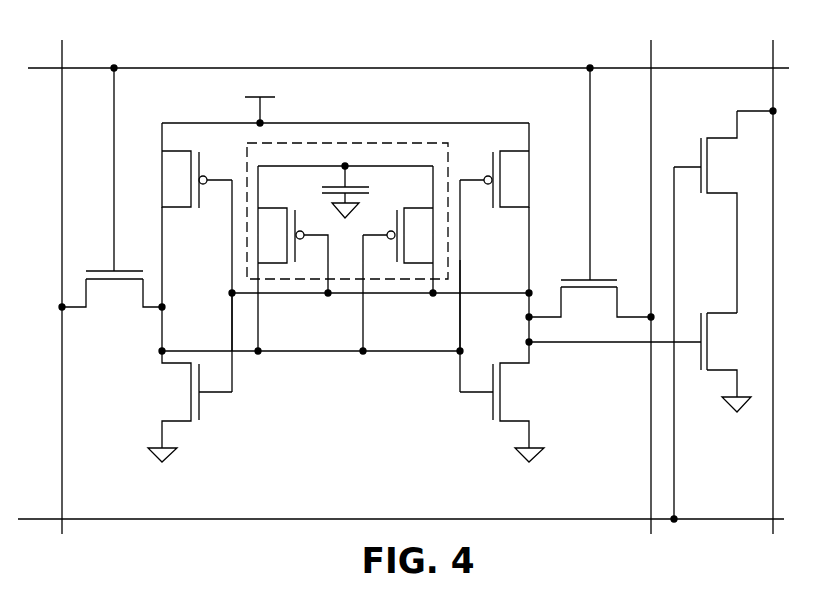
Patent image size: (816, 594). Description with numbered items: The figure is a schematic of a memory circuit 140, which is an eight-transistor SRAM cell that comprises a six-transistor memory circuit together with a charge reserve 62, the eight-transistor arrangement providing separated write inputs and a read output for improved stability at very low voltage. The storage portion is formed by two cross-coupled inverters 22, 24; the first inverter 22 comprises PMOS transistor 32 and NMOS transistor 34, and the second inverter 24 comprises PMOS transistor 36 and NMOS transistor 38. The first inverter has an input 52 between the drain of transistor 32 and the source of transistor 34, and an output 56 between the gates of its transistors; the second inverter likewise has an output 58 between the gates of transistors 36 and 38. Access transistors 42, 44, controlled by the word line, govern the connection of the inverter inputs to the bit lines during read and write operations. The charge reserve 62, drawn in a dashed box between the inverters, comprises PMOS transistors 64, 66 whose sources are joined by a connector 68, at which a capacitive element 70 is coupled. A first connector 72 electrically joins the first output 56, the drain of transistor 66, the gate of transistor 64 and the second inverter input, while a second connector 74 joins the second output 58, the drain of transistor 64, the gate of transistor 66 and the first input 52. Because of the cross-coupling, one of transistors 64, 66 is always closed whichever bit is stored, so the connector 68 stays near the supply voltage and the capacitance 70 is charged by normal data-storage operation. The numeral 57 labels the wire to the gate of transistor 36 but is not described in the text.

The memory circuit 140 is at (403, 272).
The inverter 22 is at (209, 306).
The inverter 24 is at (478, 306).
The transistor 32 is at (183, 186).
The transistor 34 is at (182, 397).
The transistor 36 is at (531, 189).
The transistor 38 is at (534, 401).
The access transistor 42 is at (102, 310).
The access transistor 44 is at (579, 318).
The input 52 is at (162, 258).
The output 56 is at (232, 240).
The second node wire 57 is at (529, 232).
The output 58 is at (460, 268).
The charge reserve 62 is at (425, 143).
The transistor 64 is at (258, 244).
The transistor 66 is at (411, 244).
The connector 68 is at (322, 166).
The capacitive element 70 is at (360, 188).
The first connector 72 is at (399, 296).
The second connector 74 is at (316, 353).